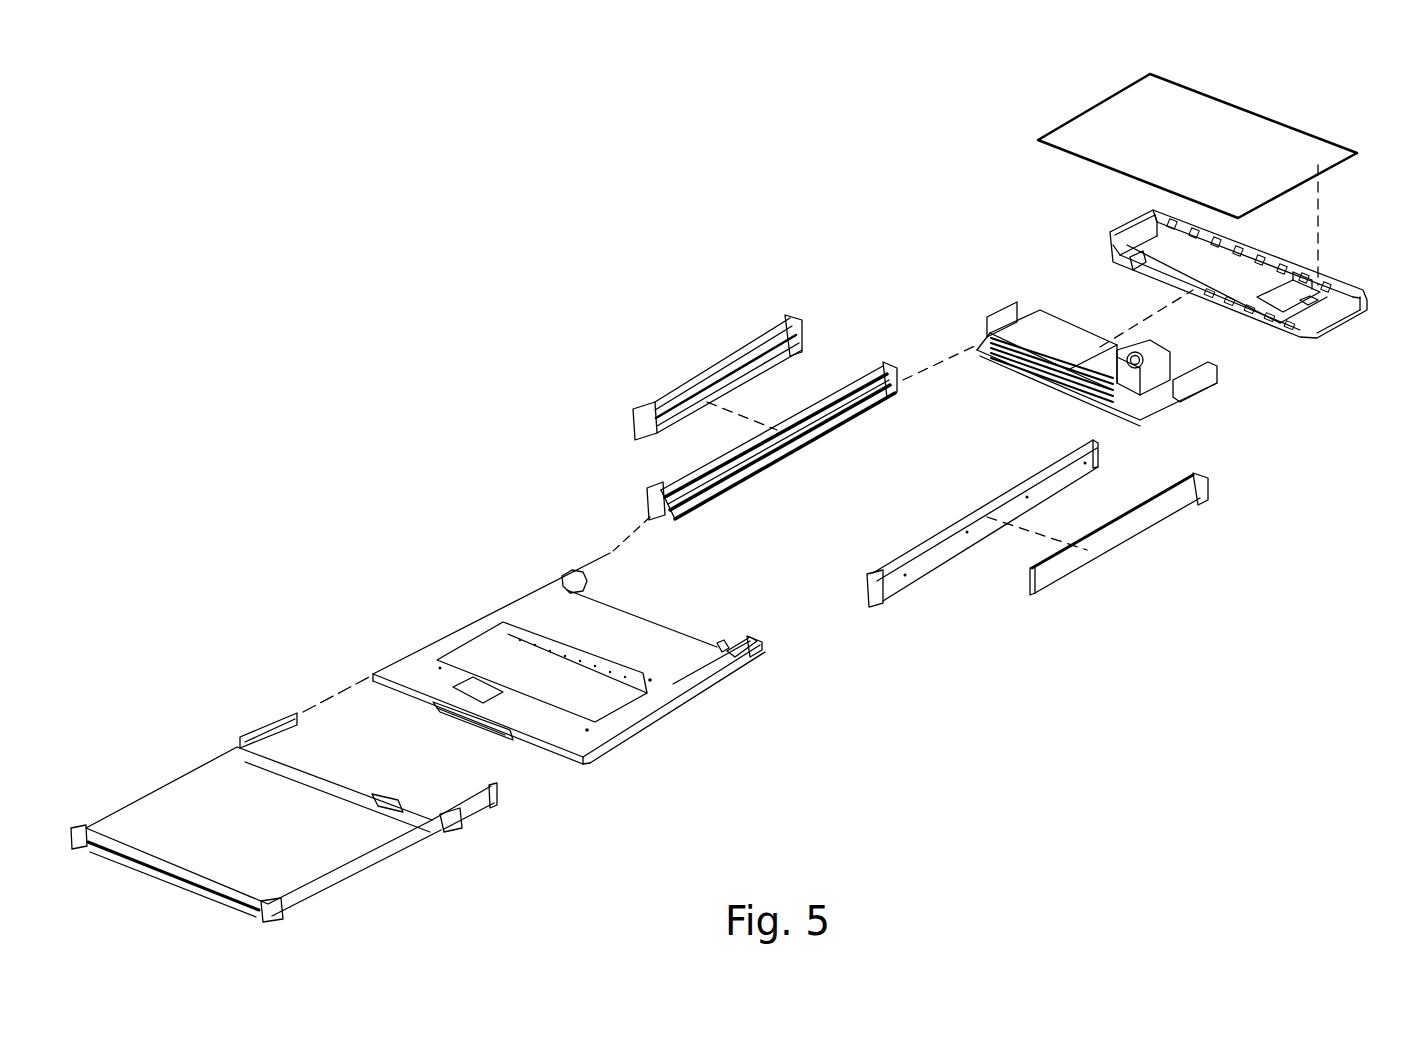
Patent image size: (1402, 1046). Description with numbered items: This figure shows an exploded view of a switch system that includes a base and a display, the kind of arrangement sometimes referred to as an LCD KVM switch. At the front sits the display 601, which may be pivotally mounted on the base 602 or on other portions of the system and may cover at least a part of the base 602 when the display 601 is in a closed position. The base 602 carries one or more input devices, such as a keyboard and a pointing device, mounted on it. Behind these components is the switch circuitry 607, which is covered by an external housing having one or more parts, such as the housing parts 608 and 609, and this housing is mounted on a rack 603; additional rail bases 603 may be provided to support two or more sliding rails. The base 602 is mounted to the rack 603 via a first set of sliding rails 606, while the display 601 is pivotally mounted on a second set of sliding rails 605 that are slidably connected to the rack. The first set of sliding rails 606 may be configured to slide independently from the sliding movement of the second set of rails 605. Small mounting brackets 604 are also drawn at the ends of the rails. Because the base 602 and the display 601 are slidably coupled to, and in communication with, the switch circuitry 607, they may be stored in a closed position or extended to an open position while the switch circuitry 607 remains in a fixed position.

The display 601 is at (187, 793).
The base 602 is at (492, 623).
The rack 603 is at (643, 413).
The mounting bracket 604 is at (650, 517).
The second set of sliding rails 605 is at (1020, 483).
The first set of sliding rails 606 is at (683, 523).
The switch circuitry 607 is at (1000, 317).
The external housing part 608 is at (1367, 300).
The external housing part 609 is at (1315, 150).